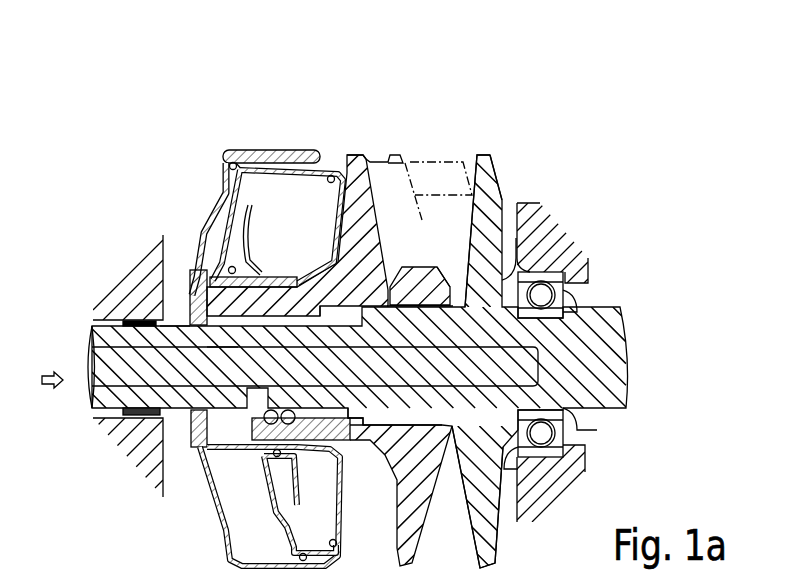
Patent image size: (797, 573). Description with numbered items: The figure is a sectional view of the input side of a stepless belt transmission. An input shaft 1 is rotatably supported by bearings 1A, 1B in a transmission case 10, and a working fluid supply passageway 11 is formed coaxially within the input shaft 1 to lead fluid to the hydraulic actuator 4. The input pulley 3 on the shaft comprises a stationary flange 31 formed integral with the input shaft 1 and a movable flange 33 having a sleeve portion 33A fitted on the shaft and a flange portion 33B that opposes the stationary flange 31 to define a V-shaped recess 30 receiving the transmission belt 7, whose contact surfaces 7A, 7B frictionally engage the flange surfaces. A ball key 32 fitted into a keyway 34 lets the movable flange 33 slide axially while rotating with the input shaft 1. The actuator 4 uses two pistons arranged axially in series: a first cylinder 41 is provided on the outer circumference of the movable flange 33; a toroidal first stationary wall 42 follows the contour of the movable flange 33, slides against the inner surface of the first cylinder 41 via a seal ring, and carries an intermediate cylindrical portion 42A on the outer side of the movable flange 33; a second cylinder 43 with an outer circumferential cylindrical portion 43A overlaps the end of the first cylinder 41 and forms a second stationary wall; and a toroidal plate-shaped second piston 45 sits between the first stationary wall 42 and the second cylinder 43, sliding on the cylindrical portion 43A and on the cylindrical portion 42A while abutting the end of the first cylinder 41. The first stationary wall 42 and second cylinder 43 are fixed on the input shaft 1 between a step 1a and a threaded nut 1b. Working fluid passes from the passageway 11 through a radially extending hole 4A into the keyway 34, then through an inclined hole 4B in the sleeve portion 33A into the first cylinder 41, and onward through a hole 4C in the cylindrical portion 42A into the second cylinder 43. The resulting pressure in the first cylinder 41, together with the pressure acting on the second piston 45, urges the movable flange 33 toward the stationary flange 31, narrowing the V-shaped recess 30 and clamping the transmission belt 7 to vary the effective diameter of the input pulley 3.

The input shaft 1 is at (610, 330).
The bearing 1A is at (566, 440).
The bearing 1B is at (133, 423).
The step 1a is at (215, 328).
The nut 1b is at (172, 328).
The input pulley 3 is at (485, 148).
The actuator 4 is at (293, 326).
The radially extending hole 4A is at (260, 397).
The inclined hole 4B is at (390, 398).
The hole 4C is at (193, 290).
The transmission belt 7 is at (421, 237).
The contact surface 7A is at (381, 284).
The contact surface 7B is at (457, 283).
The transmission case 10 is at (108, 290).
The working fluid supply passageway 11 is at (97, 377).
The V-shaped recess 30 is at (467, 155).
The stationary flange 31 is at (498, 165).
The ball key 32 is at (283, 426).
The movable flange 33 is at (353, 154).
The sleeve portion 33A is at (270, 455).
The flange portion 33B is at (368, 160).
The keyway 34 is at (345, 418).
The first cylinder 41 is at (318, 152).
The first stationary wall 42 is at (336, 227).
The cylindrical portion 42A is at (264, 281).
The second cylinder 43 is at (222, 167).
The outer circumferential cylindrical portion 43A is at (247, 152).
The second piston 45 is at (245, 213).